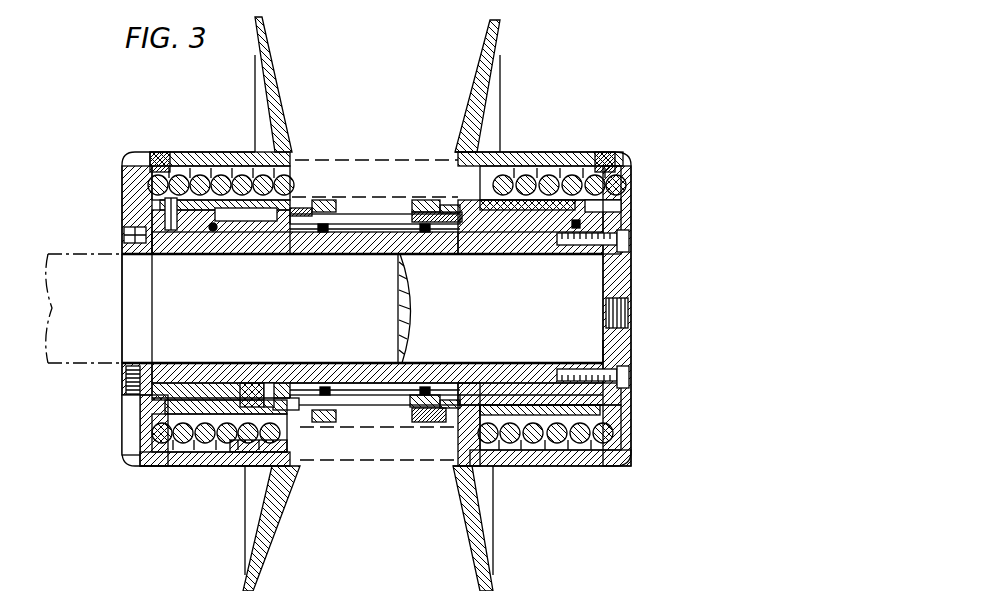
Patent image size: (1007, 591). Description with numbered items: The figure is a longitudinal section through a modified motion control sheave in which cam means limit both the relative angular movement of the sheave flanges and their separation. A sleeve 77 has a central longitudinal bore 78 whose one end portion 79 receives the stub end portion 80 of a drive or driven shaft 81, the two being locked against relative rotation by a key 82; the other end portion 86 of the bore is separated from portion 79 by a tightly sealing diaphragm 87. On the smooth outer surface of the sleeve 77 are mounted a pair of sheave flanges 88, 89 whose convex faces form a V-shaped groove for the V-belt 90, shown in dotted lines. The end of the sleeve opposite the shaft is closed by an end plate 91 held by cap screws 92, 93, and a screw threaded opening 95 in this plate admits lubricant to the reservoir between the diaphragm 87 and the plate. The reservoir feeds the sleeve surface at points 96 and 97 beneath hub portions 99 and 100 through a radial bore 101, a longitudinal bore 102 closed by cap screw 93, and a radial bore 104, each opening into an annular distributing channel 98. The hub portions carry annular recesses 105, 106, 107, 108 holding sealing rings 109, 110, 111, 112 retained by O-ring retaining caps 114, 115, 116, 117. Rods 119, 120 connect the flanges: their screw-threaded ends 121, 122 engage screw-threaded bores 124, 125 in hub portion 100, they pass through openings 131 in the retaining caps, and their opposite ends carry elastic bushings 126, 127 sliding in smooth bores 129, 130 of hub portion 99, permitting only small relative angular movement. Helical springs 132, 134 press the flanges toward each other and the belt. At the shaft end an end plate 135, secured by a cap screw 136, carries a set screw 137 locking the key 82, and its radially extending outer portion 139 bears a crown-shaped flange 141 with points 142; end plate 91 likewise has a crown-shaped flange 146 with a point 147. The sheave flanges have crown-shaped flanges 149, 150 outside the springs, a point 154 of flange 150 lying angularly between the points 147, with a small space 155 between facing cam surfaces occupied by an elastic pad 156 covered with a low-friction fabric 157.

The sleeve 77 is at (168, 402).
The central longitudinal bore 78 is at (603, 279).
The end portion of bore 79 is at (182, 330).
The stub end portion 80 is at (165, 267).
The drive or driven shaft 81 is at (54, 336).
The key 82 is at (215, 365).
The other end portion of bore 86 is at (593, 353).
The diaphragm 87 is at (411, 318).
The sheave flange 88 is at (262, 90).
The sheave flange 89 is at (488, 73).
The V-belt 90 is at (382, 158).
The end plate 91 is at (631, 297).
The cap screw 92 is at (631, 240).
The cap screw 93 is at (628, 382).
The screw threaded opening 95 is at (628, 325).
The lubricant outlet point 96 is at (256, 385).
The lubricant outlet point 97 is at (480, 397).
The distributing channel 98 is at (478, 397).
The hub portion 99 is at (207, 180).
The hub portion 100 is at (542, 212).
The radial bore 101 is at (472, 380).
The longitudinal bore 102 is at (408, 383).
The radial bore 104 is at (267, 386).
The annular recess 105 is at (213, 232).
The annular recess 106 is at (218, 230).
The annular recess 107 is at (453, 240).
The annular recess 108 is at (570, 230).
The sealing ring 109 is at (178, 256).
The sealing ring 110 is at (327, 232).
The sealing ring 111 is at (425, 233).
The sealing ring 112 is at (590, 243).
The O-ring retaining cap 114 is at (167, 207).
The O-ring retaining cap 115 is at (325, 199).
The O-ring retaining cap 116 is at (422, 199).
The O-ring retaining cap 117 is at (613, 210).
The rod 119 is at (380, 213).
The rod 120 is at (365, 407).
The screw-threaded end 121 is at (447, 204).
The screw-threaded end 122 is at (417, 415).
The screw-threaded bore 124 is at (462, 240).
The screw-threaded bore 125 is at (440, 430).
The bushing 126 is at (276, 222).
The bushing 127 is at (285, 402).
The smooth bore 129 is at (230, 190).
The smooth bore 130 is at (217, 412).
The opening 131 is at (337, 207).
The helical spring 132 is at (175, 152).
The helical spring 134 is at (505, 183).
The end plate 135 is at (123, 437).
The cap screw 136 is at (132, 232).
The set screw 137 is at (127, 382).
The radially extending outer portion 139 is at (120, 462).
The crown-shaped flange 141 is at (178, 470).
The point 142 is at (240, 463).
The crown-shaped flange 146 is at (593, 472).
The point 147 is at (522, 465).
The crown-shaped flange 149 is at (214, 200).
The crown-shaped flange 150 is at (540, 152).
The point 154 is at (593, 153).
The space 155 is at (257, 473).
The pad 156 is at (155, 152).
The fabric 157 is at (125, 156).